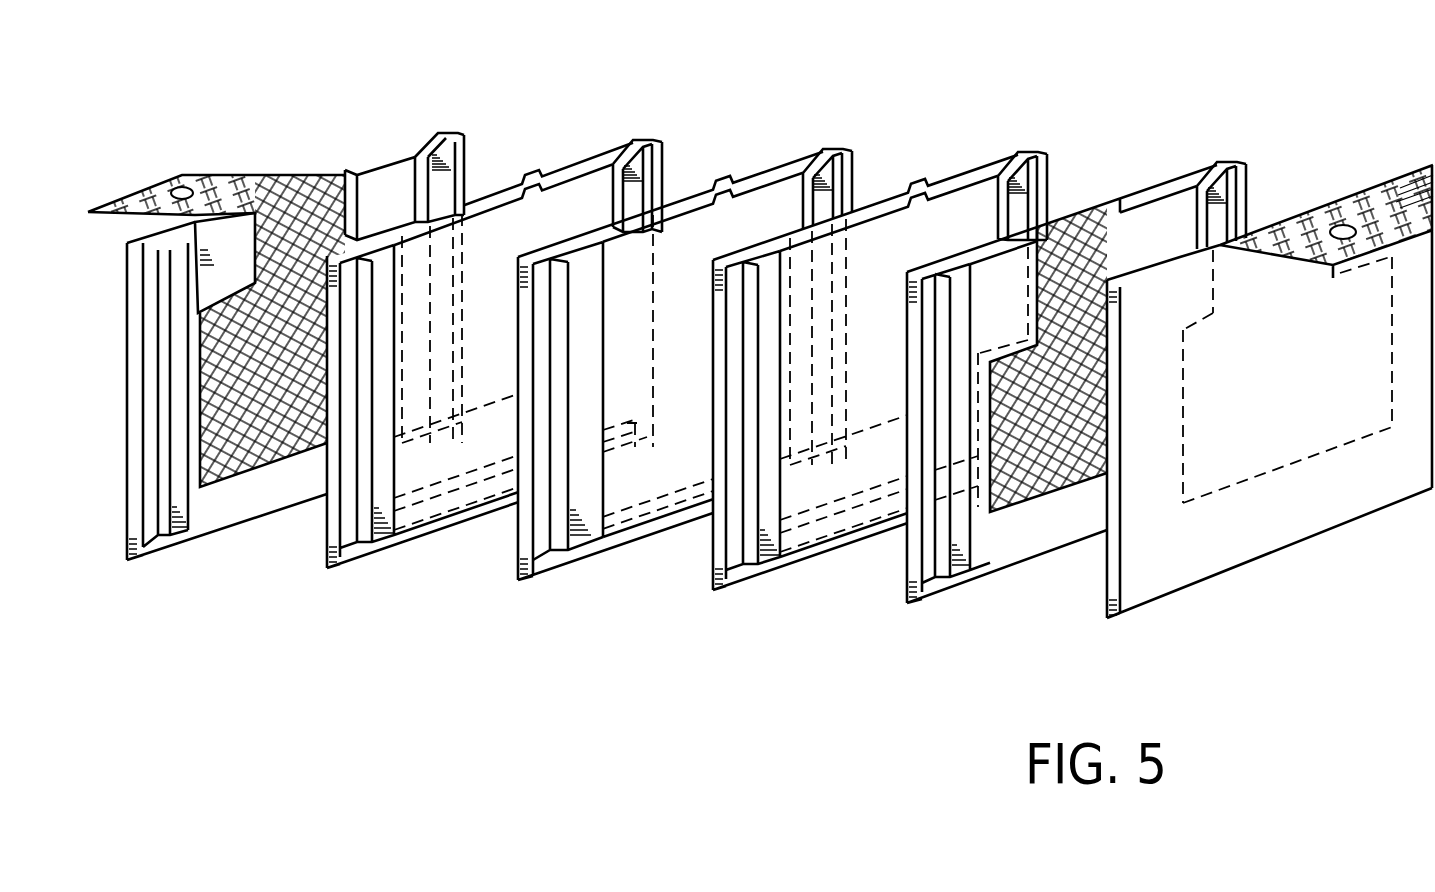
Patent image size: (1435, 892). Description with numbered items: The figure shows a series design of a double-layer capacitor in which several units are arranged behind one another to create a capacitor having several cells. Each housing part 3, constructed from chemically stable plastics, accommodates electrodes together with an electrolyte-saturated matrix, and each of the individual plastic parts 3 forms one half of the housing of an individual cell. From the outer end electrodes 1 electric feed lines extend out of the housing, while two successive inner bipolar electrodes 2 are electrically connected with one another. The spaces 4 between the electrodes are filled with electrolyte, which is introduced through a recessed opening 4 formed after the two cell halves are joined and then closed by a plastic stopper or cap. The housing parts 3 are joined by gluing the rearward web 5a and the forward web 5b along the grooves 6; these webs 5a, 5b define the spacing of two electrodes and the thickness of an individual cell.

The outer end electrode 1 is at (207, 180).
The inner bipolar electrode 2 is at (1082, 220).
The housing part 3 is at (387, 180).
The space between the electrodes 4 is at (477, 195).
The rearward web 5a is at (580, 530).
The forward web 5b is at (647, 508).
The groove 6 is at (537, 543).